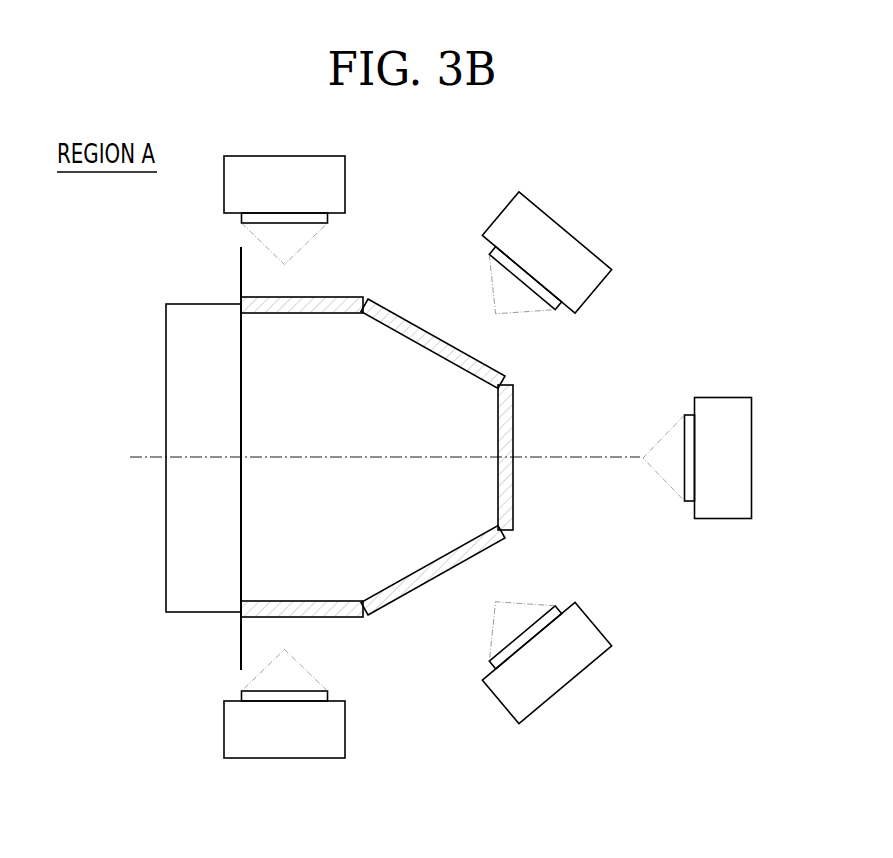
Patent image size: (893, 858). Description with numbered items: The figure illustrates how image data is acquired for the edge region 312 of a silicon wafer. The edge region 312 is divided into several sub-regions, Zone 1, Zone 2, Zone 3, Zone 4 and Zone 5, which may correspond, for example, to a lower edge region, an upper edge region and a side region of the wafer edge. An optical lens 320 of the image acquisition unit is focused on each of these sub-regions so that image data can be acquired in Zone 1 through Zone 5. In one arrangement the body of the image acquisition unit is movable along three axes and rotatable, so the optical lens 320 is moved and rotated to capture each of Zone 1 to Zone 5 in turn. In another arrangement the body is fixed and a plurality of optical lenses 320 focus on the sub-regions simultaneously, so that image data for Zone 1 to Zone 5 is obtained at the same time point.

The edge region 312 is at (320, 458).
The optical lens 320 is at (730, 378).
The Zone 1 is at (302, 320).
The Zone 2 is at (433, 345).
The Zone 3 is at (520, 457).
The Zone 4 is at (433, 566).
The Zone 5 is at (302, 596).